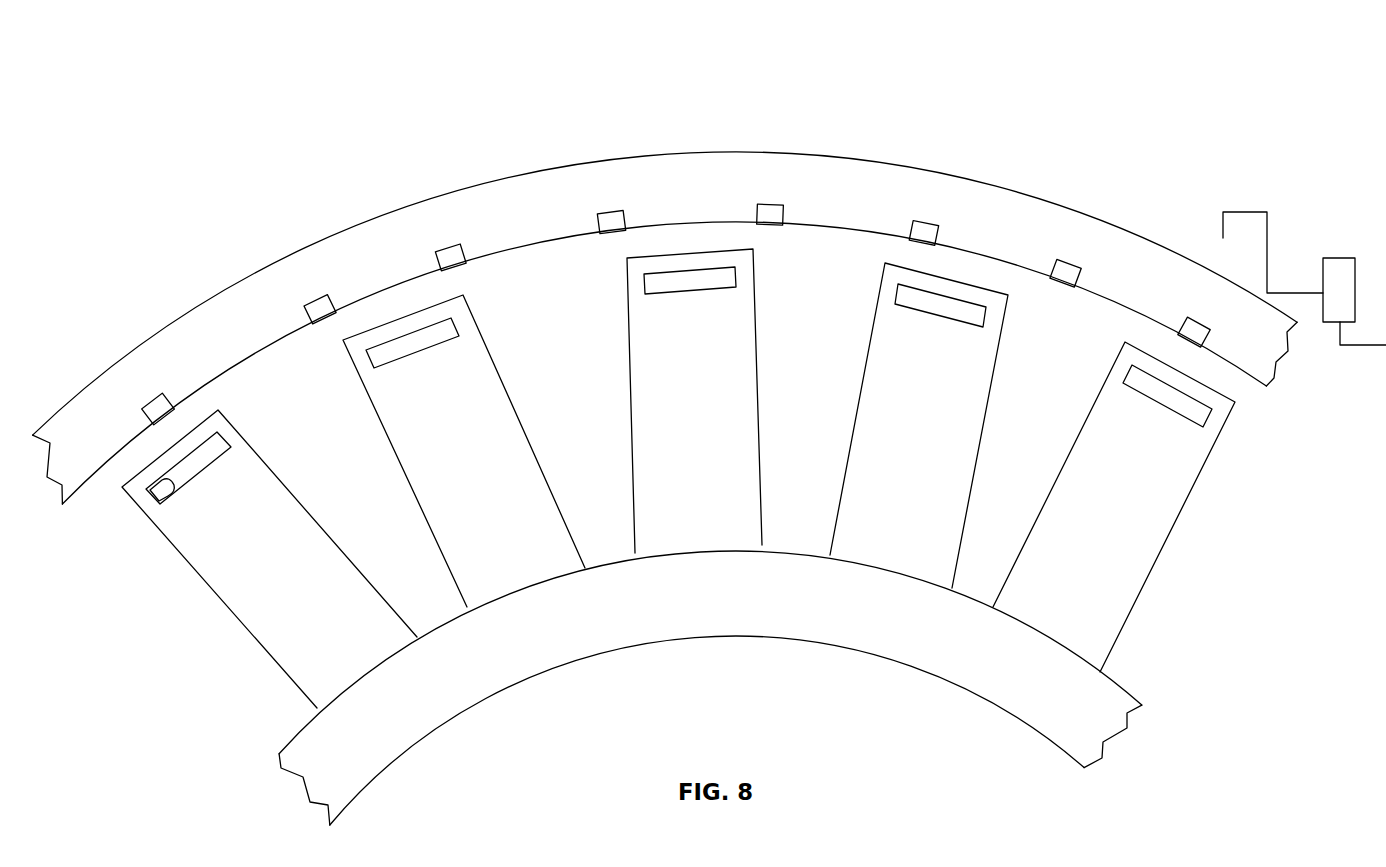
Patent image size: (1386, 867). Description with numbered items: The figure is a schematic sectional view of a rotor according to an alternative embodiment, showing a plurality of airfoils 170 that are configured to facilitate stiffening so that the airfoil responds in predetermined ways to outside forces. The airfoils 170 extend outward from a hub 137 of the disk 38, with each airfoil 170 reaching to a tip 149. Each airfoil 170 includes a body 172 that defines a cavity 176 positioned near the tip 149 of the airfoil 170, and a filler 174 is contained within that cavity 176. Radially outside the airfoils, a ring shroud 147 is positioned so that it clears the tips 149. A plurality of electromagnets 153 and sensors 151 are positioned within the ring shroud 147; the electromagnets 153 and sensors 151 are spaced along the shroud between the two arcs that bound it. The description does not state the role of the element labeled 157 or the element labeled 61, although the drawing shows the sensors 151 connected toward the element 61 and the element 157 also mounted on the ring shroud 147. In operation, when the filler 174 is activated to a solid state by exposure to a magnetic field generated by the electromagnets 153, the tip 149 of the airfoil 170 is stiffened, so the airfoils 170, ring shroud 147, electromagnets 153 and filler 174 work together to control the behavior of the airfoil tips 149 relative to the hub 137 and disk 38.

The disk 38 is at (710, 688).
The controller 61 is at (1349, 302).
The hub 137 is at (402, 730).
The ring shroud 147 is at (665, 328).
The tip 149 is at (218, 408).
The sensor 151 is at (986, 166).
The electromagnet 153 is at (150, 393).
The sensor 157 is at (1197, 318).
The airfoil 170 is at (696, 479).
The body 172 is at (670, 479).
The filler 174 is at (670, 425).
The cavity 176 is at (157, 492).